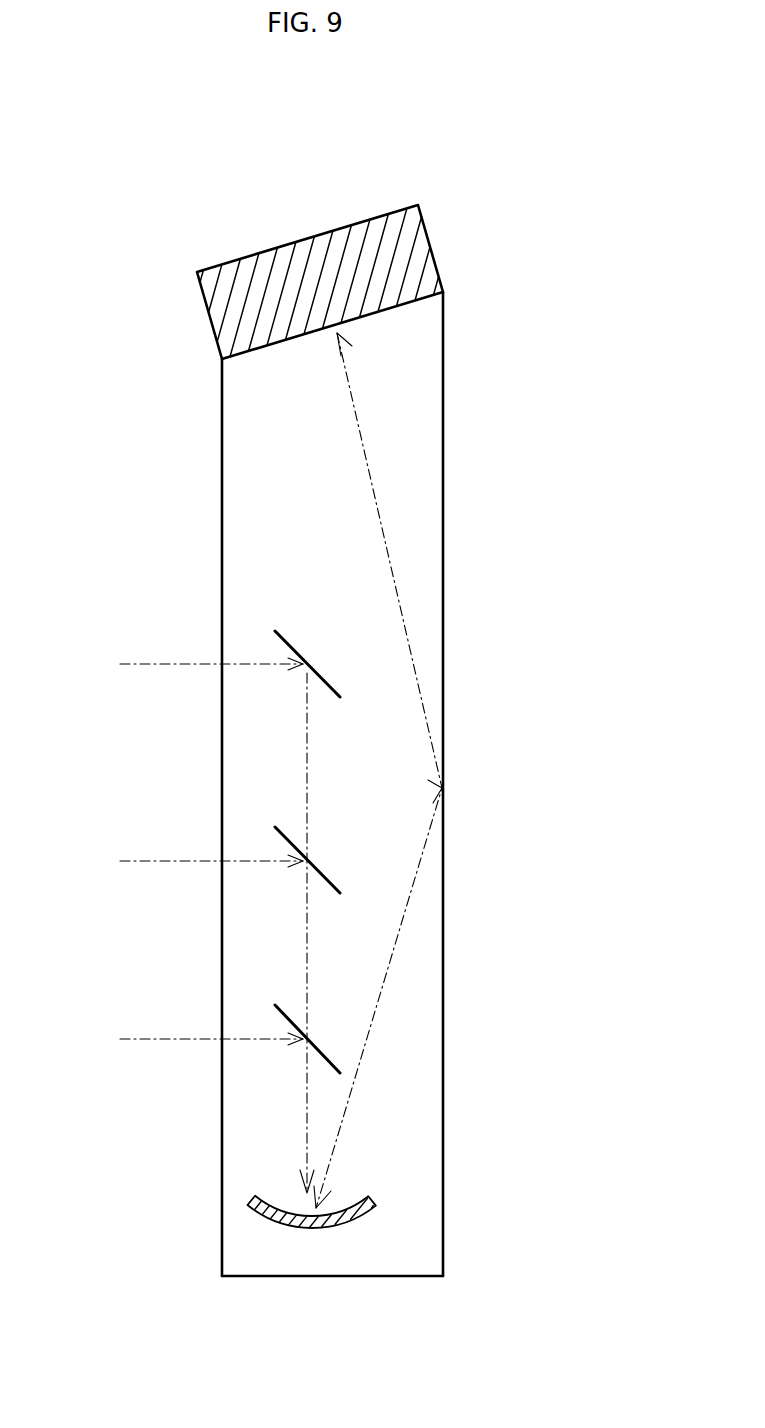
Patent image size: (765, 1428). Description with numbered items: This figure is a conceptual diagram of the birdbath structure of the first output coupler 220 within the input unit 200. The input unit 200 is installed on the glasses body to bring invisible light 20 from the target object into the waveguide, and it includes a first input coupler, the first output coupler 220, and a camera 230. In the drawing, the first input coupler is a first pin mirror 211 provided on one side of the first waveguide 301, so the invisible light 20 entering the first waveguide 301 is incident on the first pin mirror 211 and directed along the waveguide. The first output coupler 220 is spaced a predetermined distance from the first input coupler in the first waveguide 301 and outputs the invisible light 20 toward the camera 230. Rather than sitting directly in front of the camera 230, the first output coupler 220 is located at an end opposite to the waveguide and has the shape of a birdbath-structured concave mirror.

The input unit 200 is at (440, 180).
The camera 230 is at (220, 303).
The first pin mirror 211 is at (295, 647).
The invisible light 20 is at (393, 578).
The first output coupler 220 is at (332, 1227).
The first waveguide 301 is at (307, 1276).